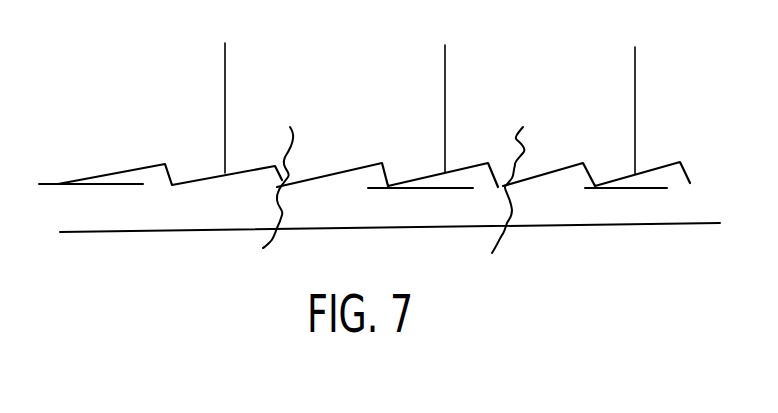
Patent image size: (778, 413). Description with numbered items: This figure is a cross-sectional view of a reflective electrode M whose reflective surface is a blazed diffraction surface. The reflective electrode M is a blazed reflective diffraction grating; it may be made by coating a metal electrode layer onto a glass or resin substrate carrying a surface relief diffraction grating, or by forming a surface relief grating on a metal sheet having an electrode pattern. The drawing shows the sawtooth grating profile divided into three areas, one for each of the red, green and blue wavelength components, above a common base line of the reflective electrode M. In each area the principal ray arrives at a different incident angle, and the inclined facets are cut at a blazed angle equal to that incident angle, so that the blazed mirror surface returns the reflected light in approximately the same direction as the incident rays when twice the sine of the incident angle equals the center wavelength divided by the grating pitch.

The reflective electrode M is at (600, 205).